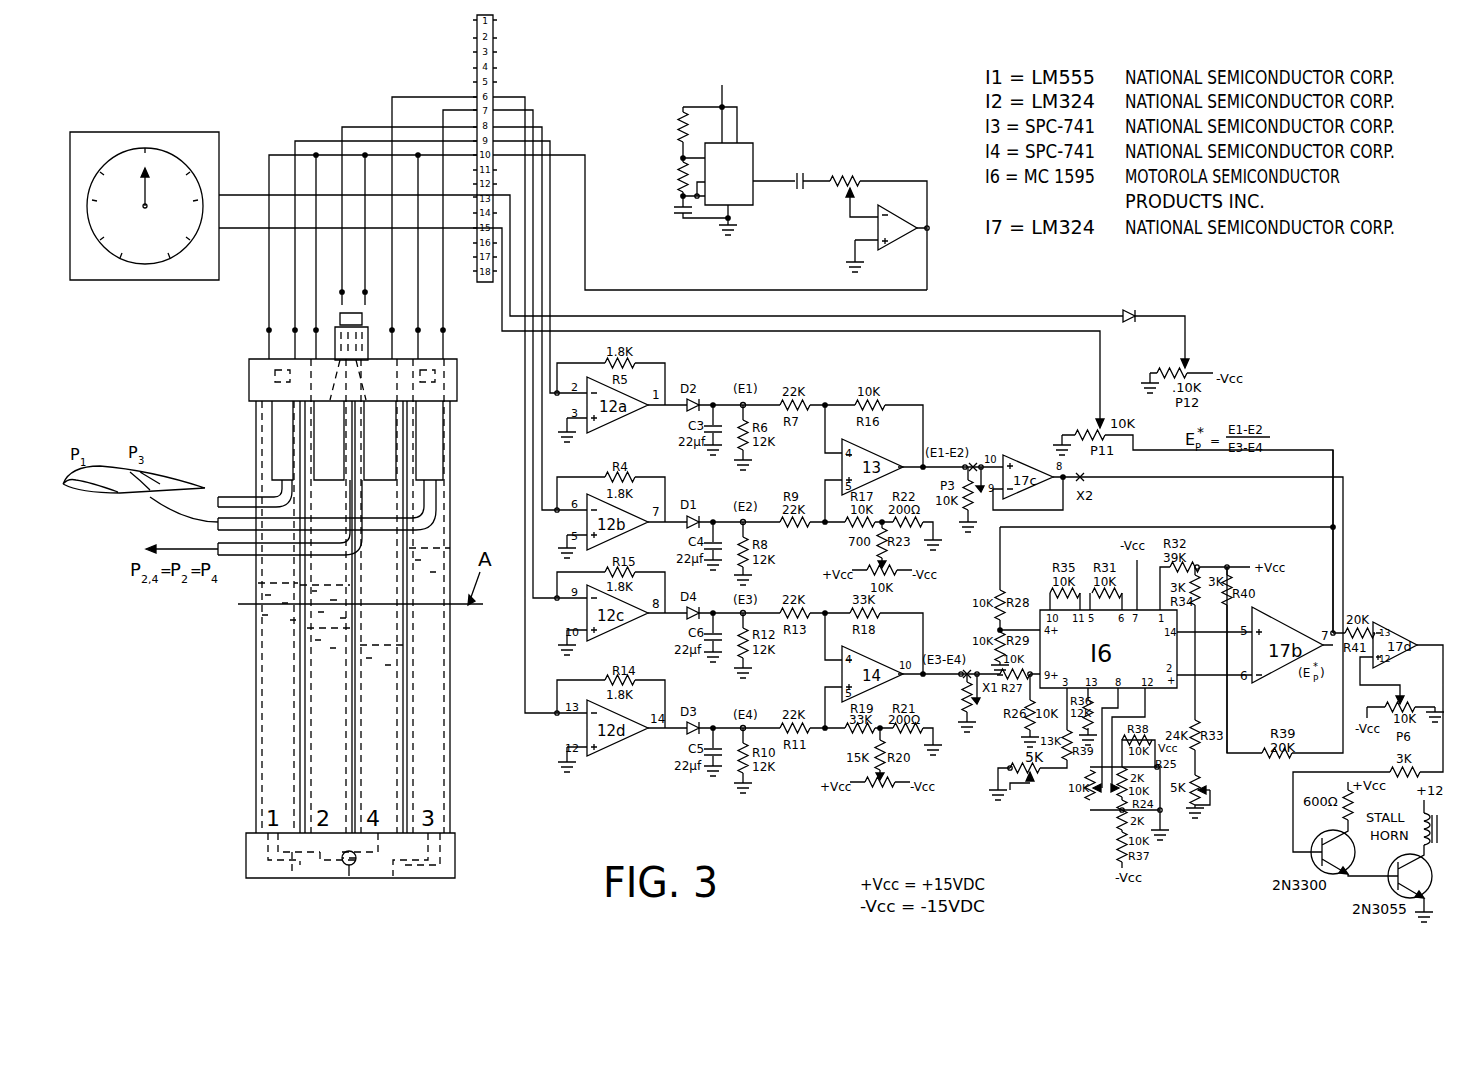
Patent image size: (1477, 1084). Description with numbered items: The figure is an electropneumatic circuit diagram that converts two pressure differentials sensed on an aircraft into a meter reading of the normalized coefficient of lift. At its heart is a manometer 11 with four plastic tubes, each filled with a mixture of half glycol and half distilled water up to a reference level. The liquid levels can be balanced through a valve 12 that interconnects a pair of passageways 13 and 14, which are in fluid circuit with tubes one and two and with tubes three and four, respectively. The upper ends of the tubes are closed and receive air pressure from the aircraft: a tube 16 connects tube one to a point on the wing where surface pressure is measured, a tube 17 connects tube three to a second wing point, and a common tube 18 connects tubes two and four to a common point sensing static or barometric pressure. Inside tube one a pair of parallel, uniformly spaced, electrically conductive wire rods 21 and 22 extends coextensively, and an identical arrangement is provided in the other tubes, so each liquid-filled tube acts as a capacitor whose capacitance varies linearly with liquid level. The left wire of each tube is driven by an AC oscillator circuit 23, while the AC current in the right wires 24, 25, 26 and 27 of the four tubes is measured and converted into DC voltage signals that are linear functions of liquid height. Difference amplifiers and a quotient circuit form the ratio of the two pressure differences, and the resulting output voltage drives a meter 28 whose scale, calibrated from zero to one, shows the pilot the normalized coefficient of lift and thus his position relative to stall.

The manometer 11 is at (240, 689).
The valve 12 is at (349, 866).
The passageway 13 is at (292, 866).
The passageway 14 is at (393, 866).
The tube 16 is at (233, 497).
The tube 17 is at (222, 524).
The common tube 18 is at (244, 546).
The wire rod 21 is at (265, 706).
The wire rod 22 is at (290, 705).
The AC oscillator circuit 23 is at (784, 160).
The right wire 24 is at (316, 305).
The right wire 25 is at (342, 262).
The right wire 26 is at (443, 283).
The right wire 27 is at (418, 308).
The meter 28 is at (211, 133).